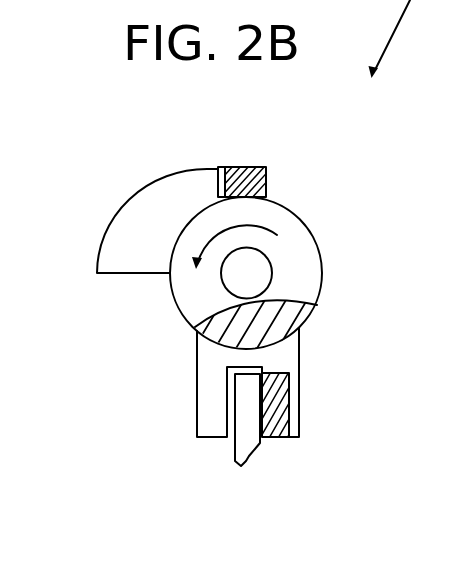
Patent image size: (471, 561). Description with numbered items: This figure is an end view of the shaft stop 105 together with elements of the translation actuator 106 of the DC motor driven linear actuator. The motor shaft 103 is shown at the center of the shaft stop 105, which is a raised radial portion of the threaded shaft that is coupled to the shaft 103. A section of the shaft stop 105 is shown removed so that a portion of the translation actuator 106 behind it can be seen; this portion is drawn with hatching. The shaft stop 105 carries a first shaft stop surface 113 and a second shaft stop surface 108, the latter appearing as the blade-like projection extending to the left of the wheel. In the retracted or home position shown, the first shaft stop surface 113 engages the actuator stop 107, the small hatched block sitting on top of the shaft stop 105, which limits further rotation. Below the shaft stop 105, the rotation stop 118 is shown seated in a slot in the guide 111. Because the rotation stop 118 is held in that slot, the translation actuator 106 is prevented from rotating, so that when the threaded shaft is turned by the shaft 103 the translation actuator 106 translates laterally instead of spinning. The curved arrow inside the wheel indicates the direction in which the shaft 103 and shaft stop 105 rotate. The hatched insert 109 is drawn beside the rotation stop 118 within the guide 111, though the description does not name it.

The shaft 103 is at (247, 272).
The shaft stop 105 is at (182, 315).
The translation actuator 106 is at (298, 314).
The actuator stop 107 is at (249, 166).
The second shaft stop surface 108 is at (127, 273).
The hatched insert 109 is at (276, 403).
The guide 111 is at (197, 410).
The first shaft stop surface 113 is at (225, 185).
The rotation stop 118 is at (253, 449).